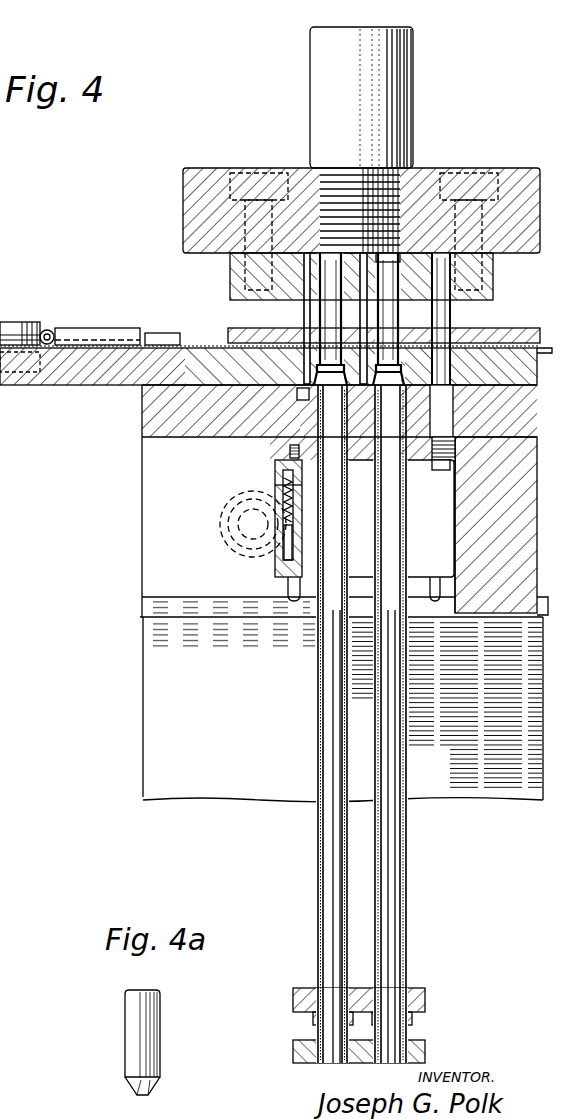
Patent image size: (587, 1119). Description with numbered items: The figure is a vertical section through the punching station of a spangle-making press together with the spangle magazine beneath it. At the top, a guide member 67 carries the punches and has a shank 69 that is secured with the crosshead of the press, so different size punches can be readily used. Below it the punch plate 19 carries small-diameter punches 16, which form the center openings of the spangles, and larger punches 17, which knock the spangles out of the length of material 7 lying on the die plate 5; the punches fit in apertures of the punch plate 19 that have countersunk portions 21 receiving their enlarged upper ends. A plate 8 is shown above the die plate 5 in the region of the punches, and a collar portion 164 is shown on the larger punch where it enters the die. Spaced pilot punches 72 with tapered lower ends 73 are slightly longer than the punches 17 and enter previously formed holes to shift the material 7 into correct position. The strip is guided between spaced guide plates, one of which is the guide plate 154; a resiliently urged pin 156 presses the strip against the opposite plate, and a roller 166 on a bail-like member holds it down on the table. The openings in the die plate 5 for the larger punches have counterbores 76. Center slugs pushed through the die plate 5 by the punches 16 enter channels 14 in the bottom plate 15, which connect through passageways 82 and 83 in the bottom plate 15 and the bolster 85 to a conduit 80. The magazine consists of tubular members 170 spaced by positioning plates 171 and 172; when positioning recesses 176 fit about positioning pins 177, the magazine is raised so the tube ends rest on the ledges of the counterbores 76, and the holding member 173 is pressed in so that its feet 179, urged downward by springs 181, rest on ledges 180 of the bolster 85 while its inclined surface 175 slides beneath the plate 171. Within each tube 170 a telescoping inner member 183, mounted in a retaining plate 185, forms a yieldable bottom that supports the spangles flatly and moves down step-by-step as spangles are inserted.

The die plate 5 is at (210, 350).
The length of material 7 is at (190, 347).
The stripper plate 8 is at (250, 329).
The channels 14 is at (292, 396).
The bottom plate 15 is at (142, 424).
The punches 16 is at (303, 315).
The punches 17 is at (397, 330).
The punch plate 19 is at (230, 283).
The countersunk portions 21 is at (397, 253).
The guide member 67 is at (183, 181).
The shank 69 is at (320, 88).
The pilot punches 72 is at (450, 318).
The tapered lower ends 73 is at (454, 420).
The counterbores 76 is at (288, 452).
The conduit 80 is at (253, 526).
The passageway 82 is at (283, 425).
The passageway 83 is at (272, 485).
The bolster 85 is at (492, 612).
The guide plate 154 is at (93, 330).
The pin 156 is at (20, 312).
The punch collar 164 is at (300, 383).
The roller 166 is at (48, 330).
The tubular members 170 is at (318, 713).
The positioning plate 171 is at (364, 518).
The positioning plate 172 is at (425, 992).
The holding member 173 is at (283, 555).
The inclined surface 175 is at (455, 455).
The positioning recesses 176 is at (440, 470).
The positioning pins 177 is at (431, 518).
The feet 179 is at (296, 601).
The ledges 180 is at (230, 612).
The springs 181 is at (288, 487).
The inner members 183 is at (397, 752).
The retaining plate 185 is at (425, 1046).